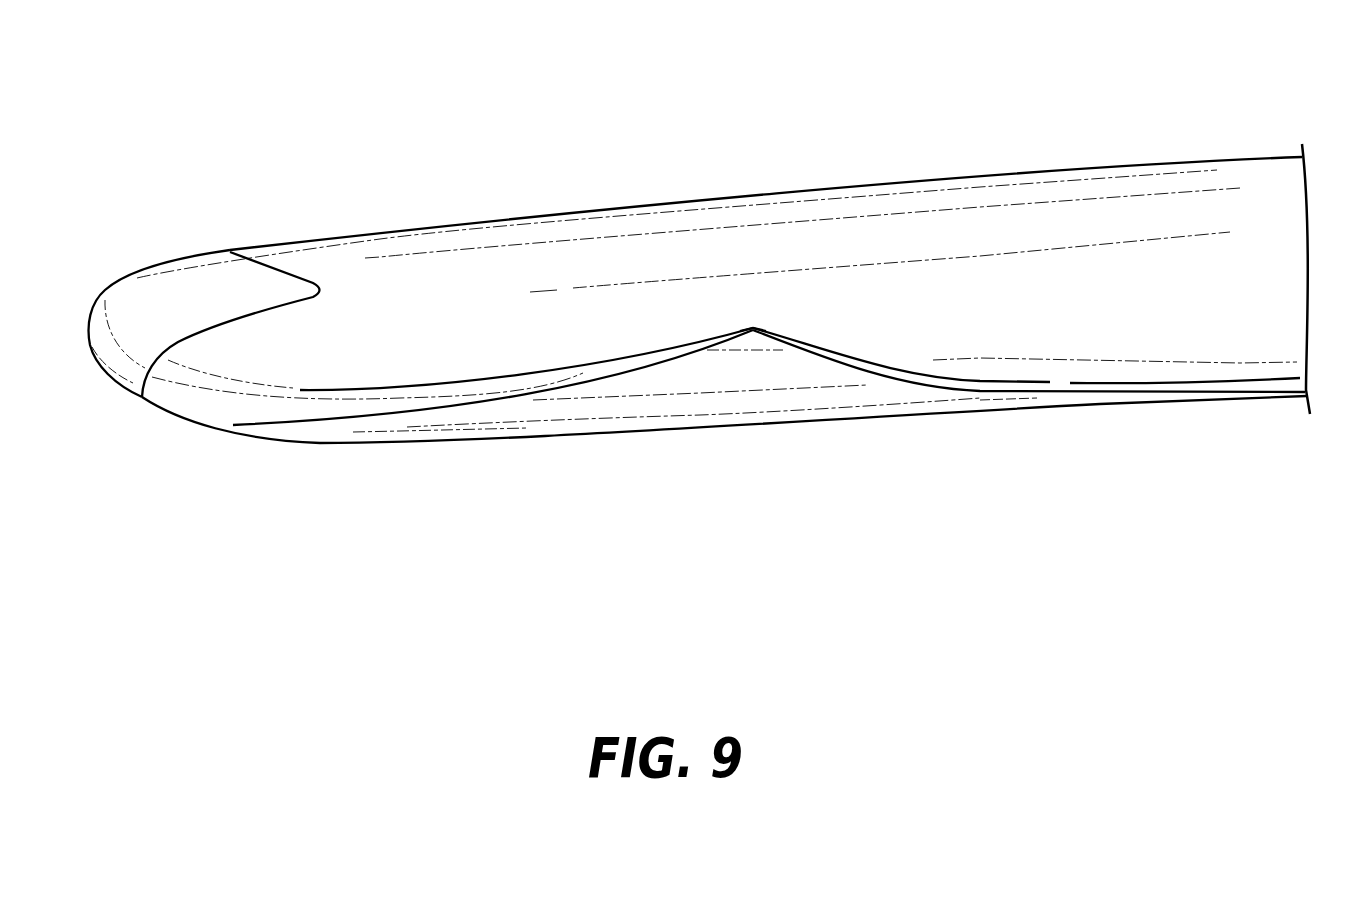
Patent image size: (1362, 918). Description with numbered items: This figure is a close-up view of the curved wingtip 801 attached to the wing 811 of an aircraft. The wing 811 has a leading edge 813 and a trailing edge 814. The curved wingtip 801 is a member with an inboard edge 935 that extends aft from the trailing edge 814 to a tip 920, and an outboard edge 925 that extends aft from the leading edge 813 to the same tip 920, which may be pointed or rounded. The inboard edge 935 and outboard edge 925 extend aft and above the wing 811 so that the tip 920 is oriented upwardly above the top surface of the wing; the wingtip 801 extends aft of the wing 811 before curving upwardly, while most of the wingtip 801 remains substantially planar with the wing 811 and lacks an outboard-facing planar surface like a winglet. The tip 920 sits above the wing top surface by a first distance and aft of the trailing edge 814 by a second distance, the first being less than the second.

The curved wingtip 801 is at (713, 455).
The wing 811 is at (1265, 260).
The leading edge 813 is at (972, 177).
The trailing edge 814 is at (1223, 393).
The tip 920 is at (753, 328).
The outboard edge 925 is at (513, 378).
The inboard edge 935 is at (870, 360).